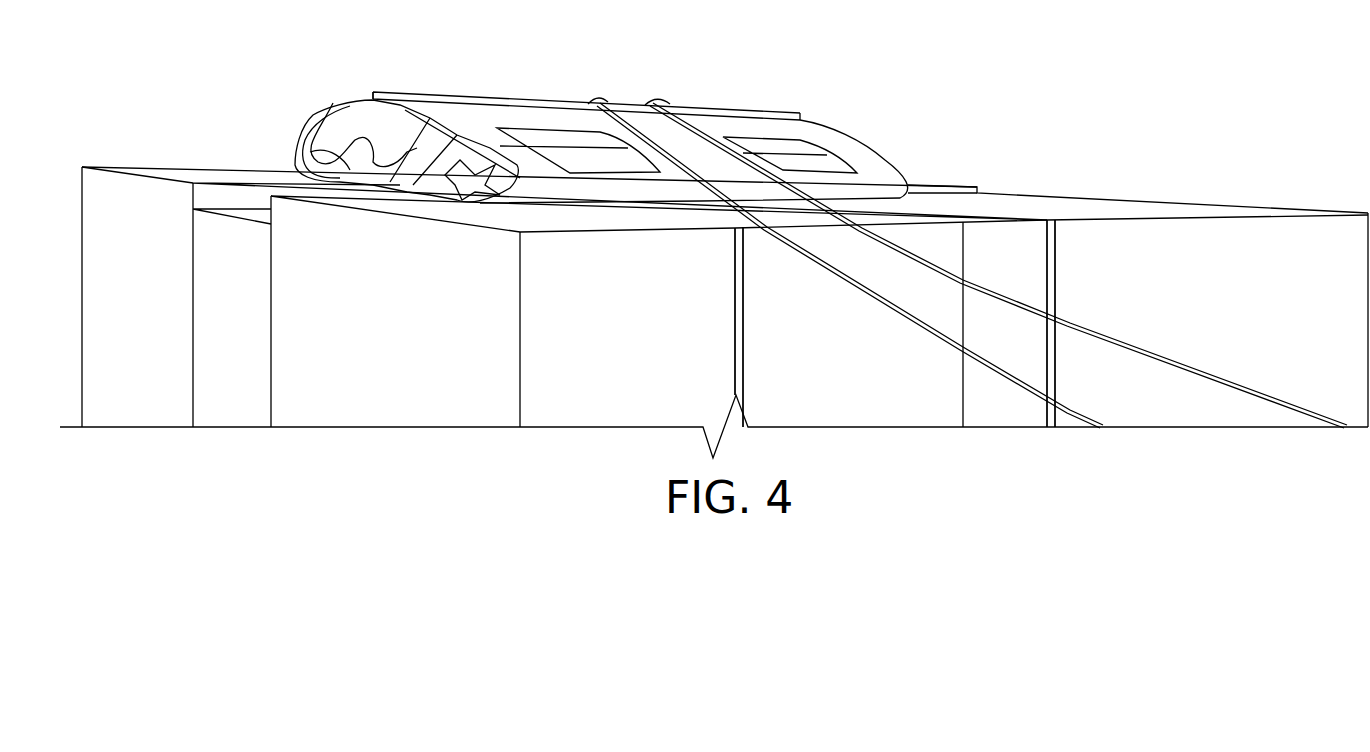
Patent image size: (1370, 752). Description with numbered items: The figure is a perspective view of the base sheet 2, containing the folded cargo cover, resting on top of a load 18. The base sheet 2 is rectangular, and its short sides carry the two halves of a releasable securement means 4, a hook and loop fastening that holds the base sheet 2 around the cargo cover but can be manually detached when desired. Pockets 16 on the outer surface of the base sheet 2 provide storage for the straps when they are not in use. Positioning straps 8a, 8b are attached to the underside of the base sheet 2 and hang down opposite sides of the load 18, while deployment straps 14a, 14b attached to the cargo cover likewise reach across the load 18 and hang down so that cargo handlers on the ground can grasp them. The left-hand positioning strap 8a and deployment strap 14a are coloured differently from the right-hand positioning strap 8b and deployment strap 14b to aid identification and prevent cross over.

The base sheet 2 is at (440, 107).
The releasable securement means 4 is at (386, 88).
The positioning strap 8a is at (734, 268).
The positioning strap 8b is at (1054, 256).
The deployment strap 14a is at (870, 290).
The deployment strap 14b is at (1118, 346).
The pockets 16 is at (562, 133).
The load 18 is at (409, 301).